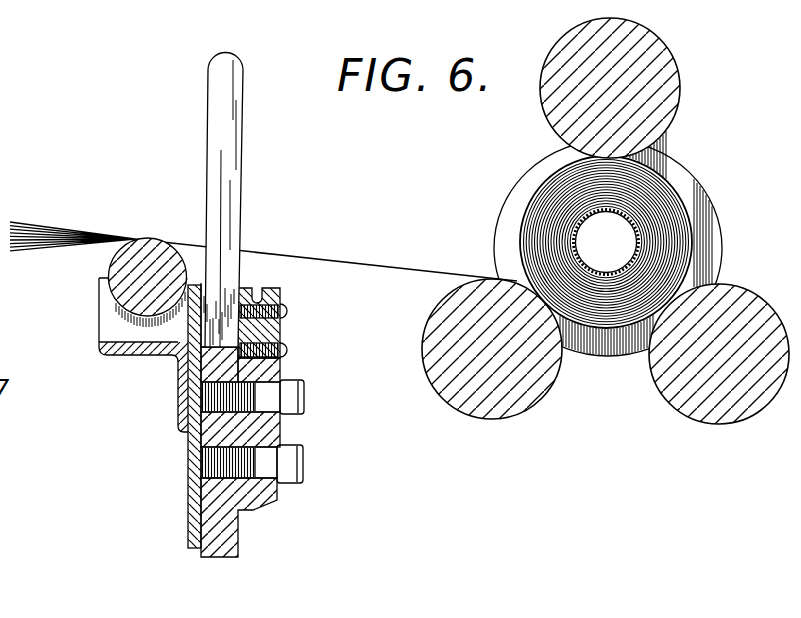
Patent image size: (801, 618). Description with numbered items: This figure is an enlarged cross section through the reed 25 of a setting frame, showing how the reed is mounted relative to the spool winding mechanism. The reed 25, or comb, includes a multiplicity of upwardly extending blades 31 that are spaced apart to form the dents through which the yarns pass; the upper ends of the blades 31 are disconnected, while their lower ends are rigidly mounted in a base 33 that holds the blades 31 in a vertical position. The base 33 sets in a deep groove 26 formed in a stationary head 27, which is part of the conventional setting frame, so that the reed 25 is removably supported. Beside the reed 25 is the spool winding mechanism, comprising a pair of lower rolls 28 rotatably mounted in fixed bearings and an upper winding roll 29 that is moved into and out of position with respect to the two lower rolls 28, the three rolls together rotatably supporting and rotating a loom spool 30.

The reed 25 is at (246, 150).
The groove 26 is at (187, 370).
The stationary head 27 is at (232, 427).
The lower rolls 28 is at (510, 393).
The upper winding roll 29 is at (662, 69).
The loom spool 30 is at (638, 242).
The blades 31 is at (237, 96).
The base 33 is at (237, 282).